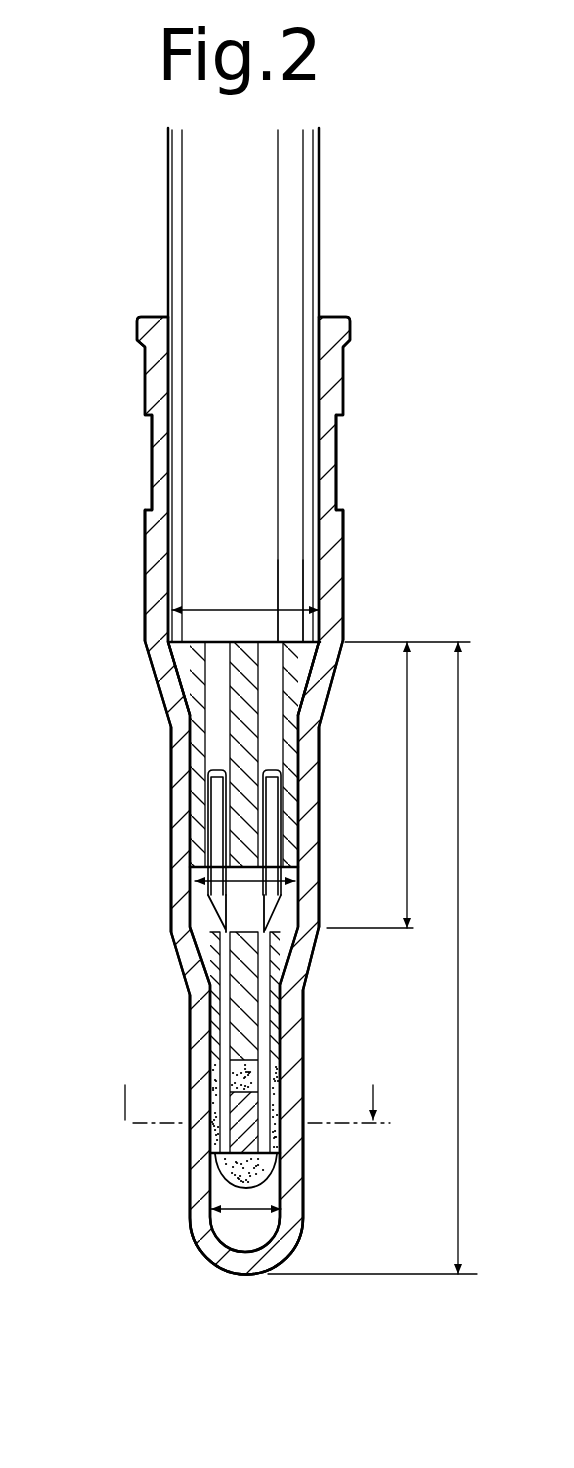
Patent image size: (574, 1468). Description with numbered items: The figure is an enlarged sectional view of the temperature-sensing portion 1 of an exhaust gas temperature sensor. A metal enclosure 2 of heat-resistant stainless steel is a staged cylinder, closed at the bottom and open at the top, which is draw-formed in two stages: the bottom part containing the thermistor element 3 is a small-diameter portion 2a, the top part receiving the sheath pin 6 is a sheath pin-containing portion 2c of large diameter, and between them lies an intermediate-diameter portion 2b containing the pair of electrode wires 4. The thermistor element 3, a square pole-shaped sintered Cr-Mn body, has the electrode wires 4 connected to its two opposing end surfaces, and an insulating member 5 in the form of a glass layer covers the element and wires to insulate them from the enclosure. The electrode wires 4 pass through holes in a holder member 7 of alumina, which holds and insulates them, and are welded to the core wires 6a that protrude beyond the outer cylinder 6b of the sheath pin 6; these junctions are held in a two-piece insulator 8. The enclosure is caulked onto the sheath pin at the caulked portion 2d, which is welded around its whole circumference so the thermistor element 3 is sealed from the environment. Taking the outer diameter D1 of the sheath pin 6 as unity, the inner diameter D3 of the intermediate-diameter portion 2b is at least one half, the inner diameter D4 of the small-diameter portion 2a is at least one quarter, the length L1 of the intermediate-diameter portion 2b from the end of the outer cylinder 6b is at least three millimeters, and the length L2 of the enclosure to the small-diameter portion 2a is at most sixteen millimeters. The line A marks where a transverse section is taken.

The temperature-sensing portion 1 is at (158, 1219).
The metal enclosure 2 is at (344, 383).
The small-diameter portion 2a is at (300, 1082).
The intermediate-diameter portion 2b is at (171, 803).
The sheath pin-containing portion 2c is at (343, 587).
The caulked portion 2d is at (336, 477).
The thermistor element 3 is at (258, 1143).
The electrode wires 4 is at (218, 912).
The insulating member 5 is at (238, 1172).
The sheath pin 6 is at (321, 280).
The core wires 6a is at (215, 733).
The outer cylinder 6b is at (297, 573).
The holder member 7 is at (237, 962).
The insulator 8 is at (195, 668).
The outer diameter of the sheath pin D1 is at (230, 609).
The inner diameter of the intermediate-diameter portion D3 is at (196, 893).
The inner diameter of the small-diameter portion D4 is at (254, 1216).
The length of the intermediate-diameter portion L1 is at (398, 785).
The length of the metal enclosure extending to the small-diameter portion L2 is at (382, 958).
The line A- A is at (253, 1089).